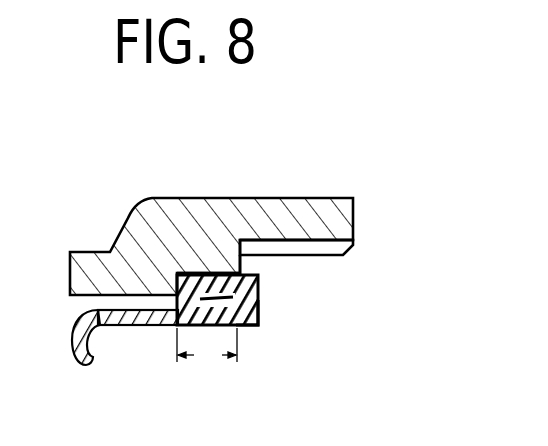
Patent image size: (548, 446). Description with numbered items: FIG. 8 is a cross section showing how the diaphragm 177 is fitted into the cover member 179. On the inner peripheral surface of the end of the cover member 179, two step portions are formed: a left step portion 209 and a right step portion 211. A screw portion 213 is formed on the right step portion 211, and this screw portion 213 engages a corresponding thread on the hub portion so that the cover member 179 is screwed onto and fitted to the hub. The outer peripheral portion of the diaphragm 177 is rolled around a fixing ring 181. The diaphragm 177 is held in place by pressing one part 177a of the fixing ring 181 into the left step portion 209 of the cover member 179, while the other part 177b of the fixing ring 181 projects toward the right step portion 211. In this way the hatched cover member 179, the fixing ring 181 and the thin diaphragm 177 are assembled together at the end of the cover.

The diaphragm 177 is at (128, 328).
The part of the fixing ring 177a is at (207, 356).
The other part of the fixing ring 177b is at (253, 328).
The cover member 179 is at (248, 213).
The fixing ring 181 is at (258, 312).
The left step portion 209 is at (193, 273).
The right step portion 211 is at (312, 238).
The screw portion 213 is at (328, 256).